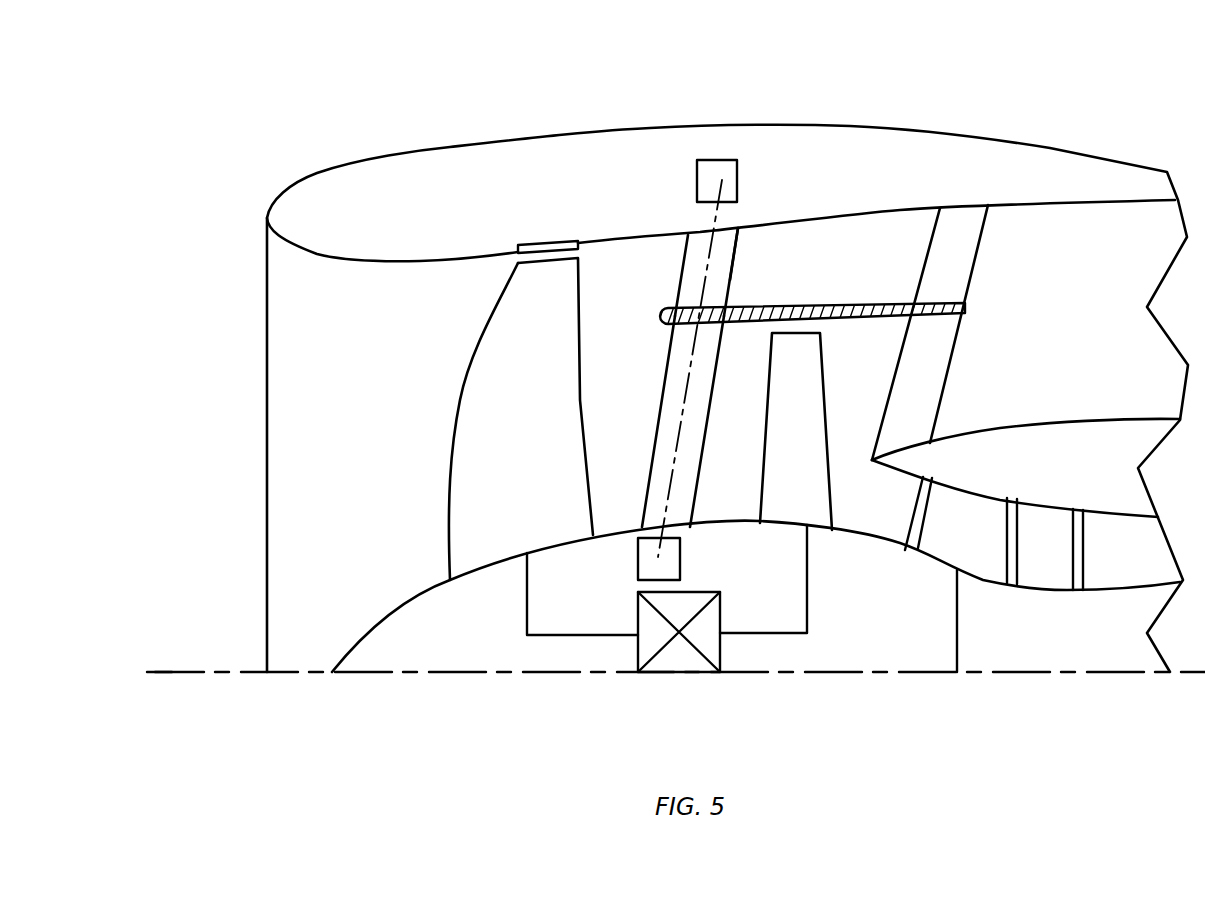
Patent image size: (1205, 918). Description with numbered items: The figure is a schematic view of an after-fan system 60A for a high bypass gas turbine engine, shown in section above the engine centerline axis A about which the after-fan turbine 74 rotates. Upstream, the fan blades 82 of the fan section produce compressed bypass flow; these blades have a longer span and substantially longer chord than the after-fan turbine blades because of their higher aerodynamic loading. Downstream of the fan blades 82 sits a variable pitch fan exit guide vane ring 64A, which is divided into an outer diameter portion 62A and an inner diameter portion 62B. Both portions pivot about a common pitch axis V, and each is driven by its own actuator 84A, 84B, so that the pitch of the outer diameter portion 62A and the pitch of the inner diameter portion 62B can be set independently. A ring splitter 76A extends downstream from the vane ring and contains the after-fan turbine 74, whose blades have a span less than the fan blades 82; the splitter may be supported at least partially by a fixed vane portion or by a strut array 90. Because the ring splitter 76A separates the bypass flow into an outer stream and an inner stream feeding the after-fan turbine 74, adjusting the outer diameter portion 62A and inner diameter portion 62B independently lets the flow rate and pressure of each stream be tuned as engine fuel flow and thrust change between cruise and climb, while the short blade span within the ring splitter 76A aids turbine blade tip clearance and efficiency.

The after-fan system 60A is at (880, 114).
The outer diameter portion 62A is at (695, 253).
The inner diameter portion 62B is at (670, 412).
The variable pitch fan exit guide vane ring 64A is at (734, 267).
The after-fan turbine 74 is at (818, 500).
The ring splitter 76A is at (820, 305).
The fan blades 82 is at (500, 318).
The actuator 84A is at (720, 160).
The actuator 84B is at (650, 567).
The strut array 90 is at (962, 230).
The pitch axis V is at (678, 457).
The engine centerline axis A is at (163, 674).